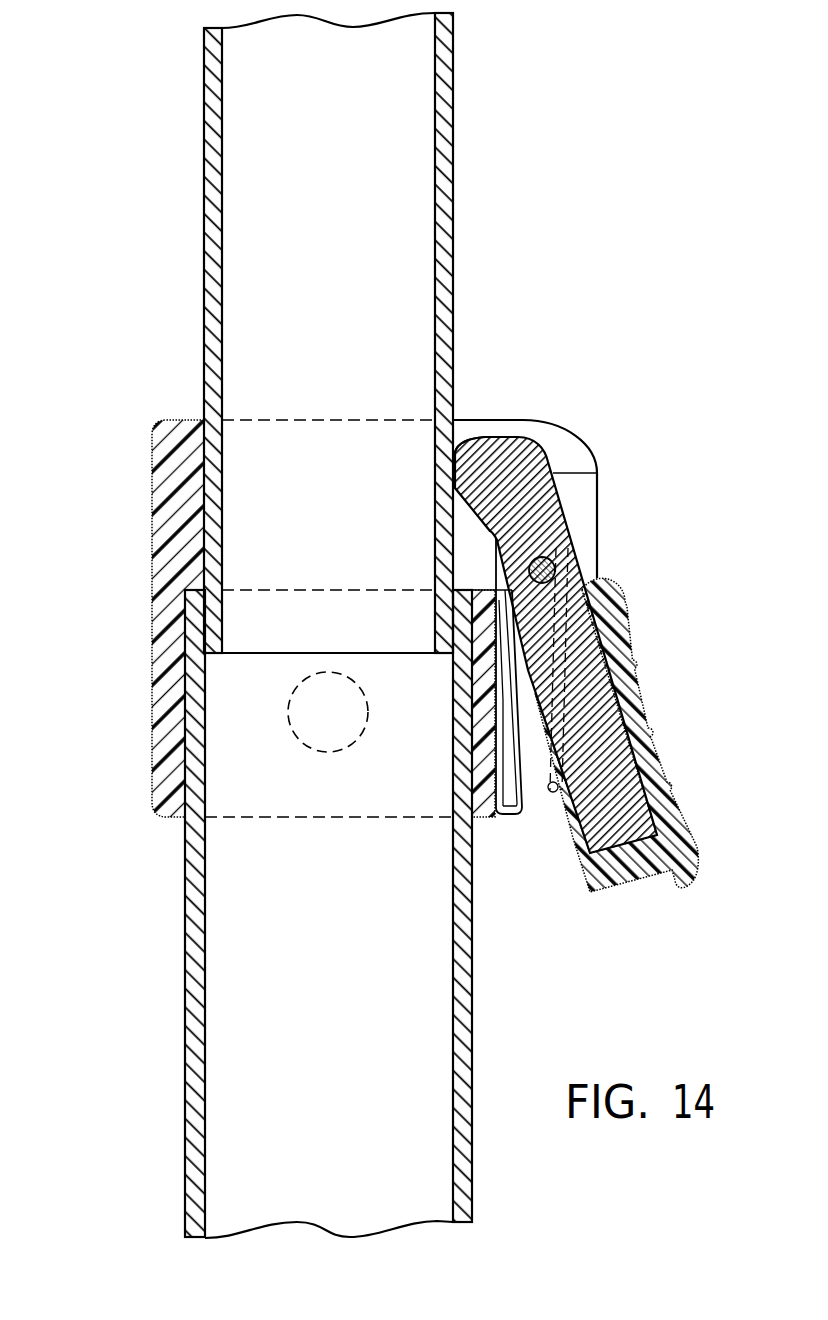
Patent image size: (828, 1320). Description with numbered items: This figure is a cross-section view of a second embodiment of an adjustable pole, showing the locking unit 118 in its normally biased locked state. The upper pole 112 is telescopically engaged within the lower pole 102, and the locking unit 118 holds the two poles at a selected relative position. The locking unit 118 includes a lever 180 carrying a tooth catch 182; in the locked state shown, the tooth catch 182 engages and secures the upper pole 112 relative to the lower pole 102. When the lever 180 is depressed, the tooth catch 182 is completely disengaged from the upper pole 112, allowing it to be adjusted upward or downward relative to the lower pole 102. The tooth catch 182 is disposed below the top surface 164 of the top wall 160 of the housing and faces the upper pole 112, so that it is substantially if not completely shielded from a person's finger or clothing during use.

The lower pole 102 is at (179, 1056).
The upper pole 112 is at (198, 201).
The locking unit 118 is at (144, 598).
The top wall 160 is at (528, 410).
The outside surface 164 is at (503, 420).
The lever 180 is at (576, 508).
The tooth catch 182 is at (465, 447).